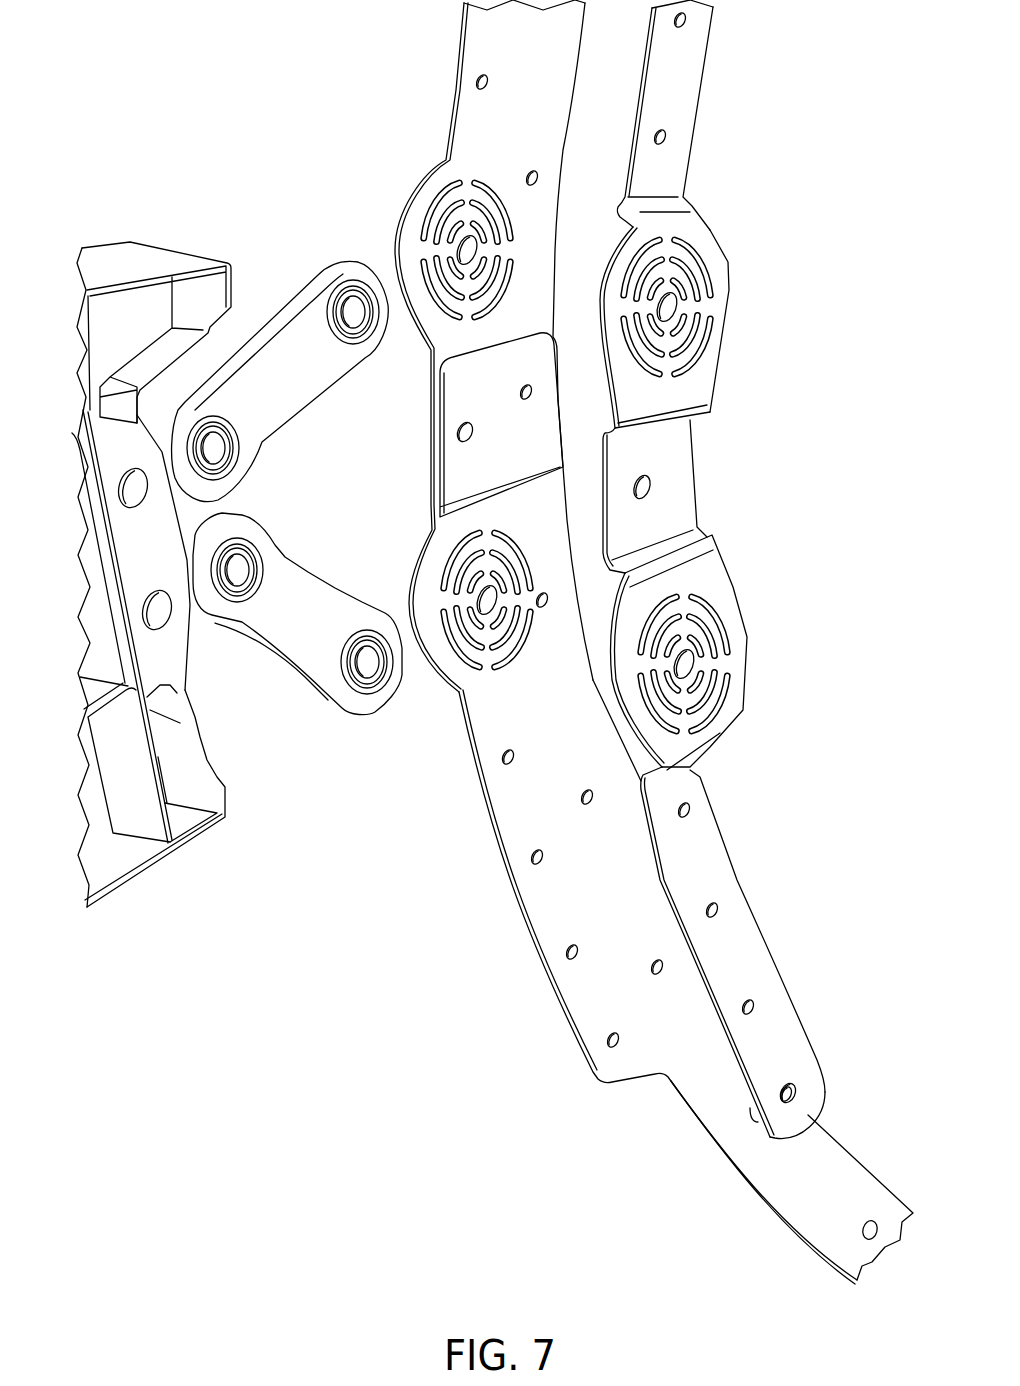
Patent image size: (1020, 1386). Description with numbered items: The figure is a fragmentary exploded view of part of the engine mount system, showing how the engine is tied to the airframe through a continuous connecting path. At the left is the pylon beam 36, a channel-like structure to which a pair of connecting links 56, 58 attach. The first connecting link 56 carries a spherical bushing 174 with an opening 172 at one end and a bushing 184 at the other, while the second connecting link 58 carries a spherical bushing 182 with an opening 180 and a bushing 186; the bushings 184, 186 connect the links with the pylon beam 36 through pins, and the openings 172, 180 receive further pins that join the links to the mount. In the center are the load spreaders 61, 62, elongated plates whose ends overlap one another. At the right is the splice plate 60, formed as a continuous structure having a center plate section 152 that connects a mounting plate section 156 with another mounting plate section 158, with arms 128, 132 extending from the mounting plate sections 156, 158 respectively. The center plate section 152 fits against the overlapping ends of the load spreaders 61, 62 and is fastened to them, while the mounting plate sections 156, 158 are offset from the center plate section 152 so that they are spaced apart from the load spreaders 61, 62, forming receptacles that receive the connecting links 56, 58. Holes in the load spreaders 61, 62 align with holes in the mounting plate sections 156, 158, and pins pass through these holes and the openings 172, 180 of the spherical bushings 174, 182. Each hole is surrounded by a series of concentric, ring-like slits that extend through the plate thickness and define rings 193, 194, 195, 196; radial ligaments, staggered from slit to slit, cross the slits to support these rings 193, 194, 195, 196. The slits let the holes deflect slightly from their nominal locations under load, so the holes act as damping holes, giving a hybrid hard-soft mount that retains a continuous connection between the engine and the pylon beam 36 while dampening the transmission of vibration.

The pylon beam 36 is at (130, 680).
The connecting link 56 is at (280, 356).
The connecting link 58 is at (314, 634).
The splice plate 60 is at (710, 879).
The load spreader 61 is at (494, 358).
The load spreader 62 is at (836, 1199).
The arm 128 is at (690, 100).
The arm 132 is at (750, 972).
The center plate section 152 is at (668, 534).
The mounting plate section 156 is at (704, 327).
The mounting plate section 158 is at (716, 650).
The opening 172 is at (354, 305).
The spherical bushing 174 is at (354, 302).
The opening 180 is at (360, 668).
The spherical bushing 182 is at (372, 680).
The bushing 184 is at (227, 450).
The bushing 186 is at (255, 562).
The ring 193 is at (488, 250).
The ring 194 is at (490, 615).
The ring 195 is at (685, 302).
The ring 196 is at (702, 663).